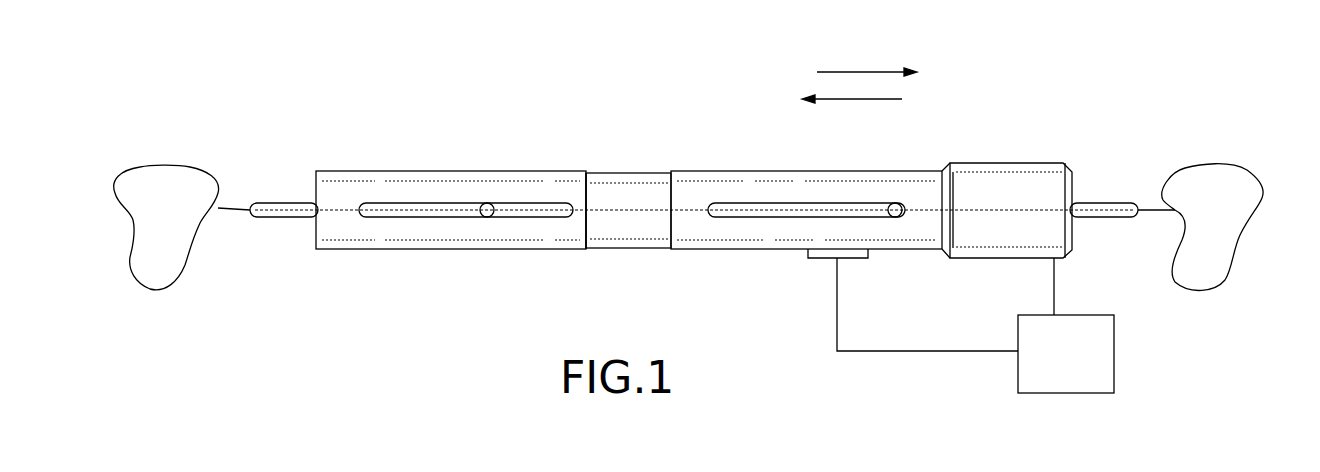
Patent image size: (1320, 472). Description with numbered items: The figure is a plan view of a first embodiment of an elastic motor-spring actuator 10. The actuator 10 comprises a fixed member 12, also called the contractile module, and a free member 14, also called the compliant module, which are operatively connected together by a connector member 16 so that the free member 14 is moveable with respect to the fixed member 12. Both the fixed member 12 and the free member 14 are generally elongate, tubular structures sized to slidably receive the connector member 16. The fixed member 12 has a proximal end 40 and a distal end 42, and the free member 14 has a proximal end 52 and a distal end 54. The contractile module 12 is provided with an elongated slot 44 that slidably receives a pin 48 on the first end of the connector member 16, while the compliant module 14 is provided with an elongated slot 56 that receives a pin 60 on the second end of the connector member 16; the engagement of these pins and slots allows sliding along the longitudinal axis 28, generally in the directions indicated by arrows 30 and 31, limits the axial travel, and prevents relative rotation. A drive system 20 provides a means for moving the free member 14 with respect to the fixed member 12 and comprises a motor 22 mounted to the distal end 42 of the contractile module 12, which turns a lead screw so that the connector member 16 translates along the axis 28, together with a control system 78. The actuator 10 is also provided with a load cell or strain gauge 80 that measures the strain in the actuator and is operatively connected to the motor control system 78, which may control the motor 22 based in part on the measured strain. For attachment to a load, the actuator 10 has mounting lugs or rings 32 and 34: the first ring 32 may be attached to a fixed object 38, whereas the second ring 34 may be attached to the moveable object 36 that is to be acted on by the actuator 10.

The elastic motor-spring actuator 10 is at (696, 192).
The fixed member 12 is at (839, 219).
The free member 14 is at (450, 207).
The connector member 16 is at (606, 262).
The drive system 20 is at (968, 272).
The motor 22 is at (1007, 215).
The longitudinal axis 28 is at (630, 208).
The arrow 30 is at (848, 72).
The arrow 31 is at (862, 99).
The first ring 32 is at (1096, 203).
The second ring 34 is at (284, 217).
The moveable object 36 is at (170, 165).
The fixed object 38 is at (1262, 200).
The proximal end 40 is at (672, 249).
The distal end 42 is at (935, 171).
The elongated slot 44 is at (790, 218).
The pin 48 is at (893, 222).
The proximal end 52 is at (572, 171).
The distal end 54 is at (331, 249).
The elongated slot 56 is at (445, 218).
The pin 60 is at (494, 213).
The control system 78 is at (1114, 372).
The load cell or strain gauge 80 is at (818, 260).